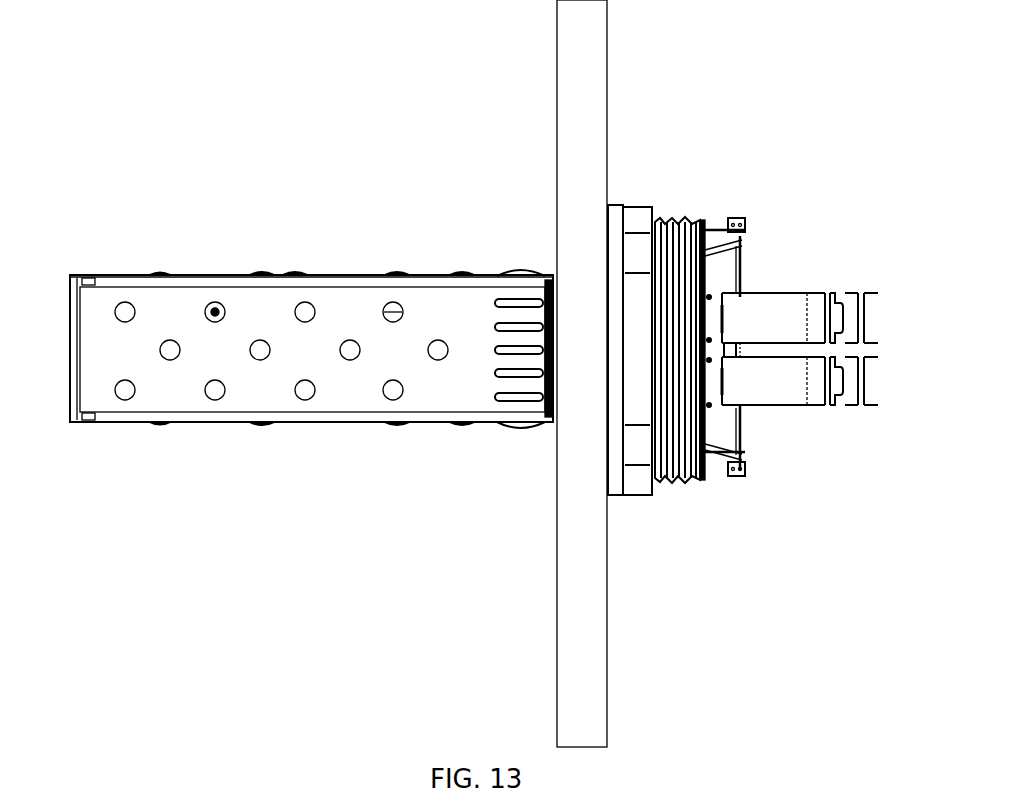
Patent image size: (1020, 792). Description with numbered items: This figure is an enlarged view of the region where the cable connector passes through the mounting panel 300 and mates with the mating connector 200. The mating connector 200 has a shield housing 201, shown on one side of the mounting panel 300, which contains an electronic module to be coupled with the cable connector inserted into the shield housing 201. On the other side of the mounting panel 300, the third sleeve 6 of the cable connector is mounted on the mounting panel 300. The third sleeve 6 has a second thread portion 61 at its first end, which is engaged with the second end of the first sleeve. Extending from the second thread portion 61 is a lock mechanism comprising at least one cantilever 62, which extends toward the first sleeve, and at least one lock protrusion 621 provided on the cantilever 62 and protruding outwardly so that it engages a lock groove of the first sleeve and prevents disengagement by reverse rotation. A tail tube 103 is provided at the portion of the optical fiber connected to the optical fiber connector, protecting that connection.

The mounting panel 300 is at (565, 192).
The mating connector 200 is at (233, 357).
The shield housing 201 is at (330, 273).
The third sleeve 6 is at (627, 447).
The second thread portion 61 is at (675, 218).
The cantilever 62 is at (707, 462).
The lock protrusion 621 is at (727, 220).
The tail tube 103 is at (788, 383).